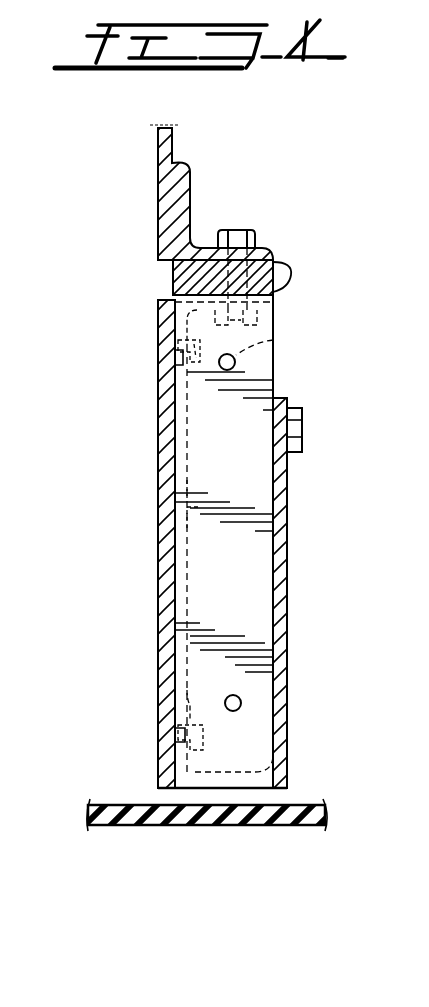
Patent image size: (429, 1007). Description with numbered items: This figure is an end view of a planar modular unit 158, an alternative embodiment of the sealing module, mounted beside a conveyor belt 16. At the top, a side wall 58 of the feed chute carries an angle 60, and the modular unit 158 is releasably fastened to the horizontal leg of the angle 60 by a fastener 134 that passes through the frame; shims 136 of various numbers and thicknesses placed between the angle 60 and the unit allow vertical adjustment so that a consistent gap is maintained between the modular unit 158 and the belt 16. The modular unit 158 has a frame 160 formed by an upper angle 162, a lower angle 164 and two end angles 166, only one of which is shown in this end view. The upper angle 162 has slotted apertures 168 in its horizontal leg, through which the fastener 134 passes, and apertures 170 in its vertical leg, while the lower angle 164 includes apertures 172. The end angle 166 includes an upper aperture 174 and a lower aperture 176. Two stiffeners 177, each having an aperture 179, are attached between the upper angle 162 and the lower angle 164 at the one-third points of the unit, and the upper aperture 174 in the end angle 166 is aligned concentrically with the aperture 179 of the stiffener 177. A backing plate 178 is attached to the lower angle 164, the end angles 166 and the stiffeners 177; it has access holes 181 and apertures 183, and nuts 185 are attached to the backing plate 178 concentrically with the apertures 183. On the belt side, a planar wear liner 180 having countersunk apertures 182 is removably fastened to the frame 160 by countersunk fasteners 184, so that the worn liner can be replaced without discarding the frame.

The belt 16 is at (210, 826).
The side wall 58 is at (159, 152).
The angle 60 is at (190, 182).
The fastener 134 is at (236, 230).
The shim 136 is at (291, 266).
The planar modular unit 158 is at (335, 555).
The frame 160 is at (276, 380).
The upper angle 162 is at (275, 303).
The lower angle 164 is at (277, 757).
The end angle 166 is at (247, 583).
The slotted aperture 168 is at (170, 303).
The aperture 170 is at (161, 396).
The aperture 172 is at (166, 708).
The upper aperture 174 is at (238, 364).
The lower aperture 176 is at (242, 705).
The stiffener 177 is at (158, 456).
The backing plate 178 is at (288, 490).
The aperture 179 is at (273, 338).
The planar wear liner 180 is at (159, 553).
The access hole 181 is at (288, 625).
The countersunk aperture 182 is at (180, 346).
The aperture 183 is at (303, 426).
The countersunk fastener 184 is at (183, 357).
The nut 185 is at (303, 448).